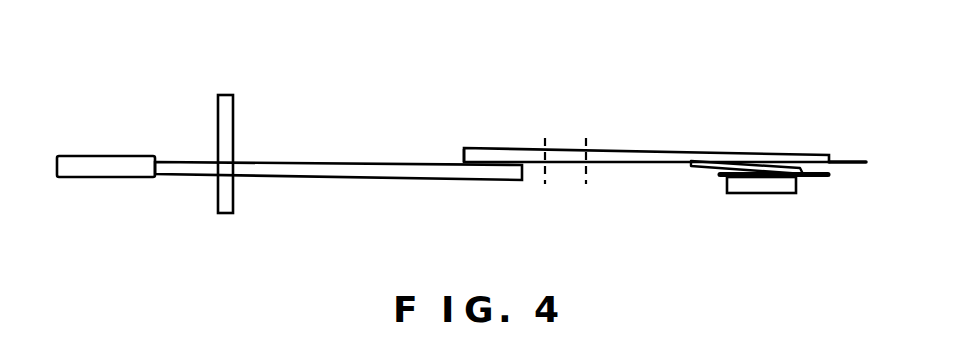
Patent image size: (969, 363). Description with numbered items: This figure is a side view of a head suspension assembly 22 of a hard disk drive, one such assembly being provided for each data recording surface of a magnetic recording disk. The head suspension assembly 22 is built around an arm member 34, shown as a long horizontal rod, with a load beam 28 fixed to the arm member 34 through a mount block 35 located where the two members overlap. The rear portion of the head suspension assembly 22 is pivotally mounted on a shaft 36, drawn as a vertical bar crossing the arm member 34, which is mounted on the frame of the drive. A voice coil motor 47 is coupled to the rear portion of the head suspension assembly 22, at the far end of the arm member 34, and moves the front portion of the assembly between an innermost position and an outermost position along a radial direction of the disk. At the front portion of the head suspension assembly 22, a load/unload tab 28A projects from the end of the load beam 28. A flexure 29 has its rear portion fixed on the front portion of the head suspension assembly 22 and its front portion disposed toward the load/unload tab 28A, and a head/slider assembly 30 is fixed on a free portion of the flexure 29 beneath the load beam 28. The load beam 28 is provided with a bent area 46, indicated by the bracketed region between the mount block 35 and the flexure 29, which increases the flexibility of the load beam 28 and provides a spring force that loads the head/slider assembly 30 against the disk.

The head suspension assembly 22 is at (503, 106).
The load beam 28 is at (665, 150).
The load/unload tab 28A is at (848, 158).
The flexure 29 is at (698, 169).
The head/slider assembly 30 is at (768, 185).
The arm member 34 is at (359, 163).
The mount block 35 is at (463, 163).
The shaft 36 is at (218, 123).
The bent area 46 is at (593, 190).
The voice coil motor 47 is at (112, 155).